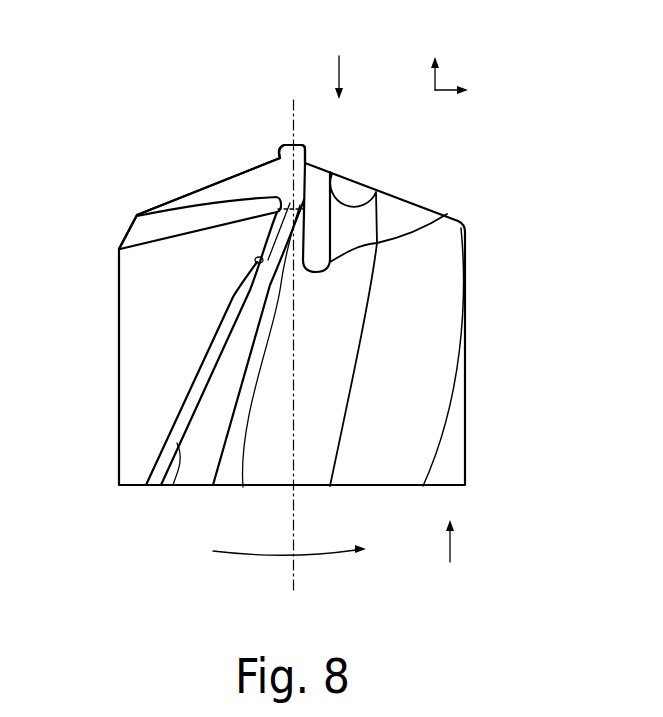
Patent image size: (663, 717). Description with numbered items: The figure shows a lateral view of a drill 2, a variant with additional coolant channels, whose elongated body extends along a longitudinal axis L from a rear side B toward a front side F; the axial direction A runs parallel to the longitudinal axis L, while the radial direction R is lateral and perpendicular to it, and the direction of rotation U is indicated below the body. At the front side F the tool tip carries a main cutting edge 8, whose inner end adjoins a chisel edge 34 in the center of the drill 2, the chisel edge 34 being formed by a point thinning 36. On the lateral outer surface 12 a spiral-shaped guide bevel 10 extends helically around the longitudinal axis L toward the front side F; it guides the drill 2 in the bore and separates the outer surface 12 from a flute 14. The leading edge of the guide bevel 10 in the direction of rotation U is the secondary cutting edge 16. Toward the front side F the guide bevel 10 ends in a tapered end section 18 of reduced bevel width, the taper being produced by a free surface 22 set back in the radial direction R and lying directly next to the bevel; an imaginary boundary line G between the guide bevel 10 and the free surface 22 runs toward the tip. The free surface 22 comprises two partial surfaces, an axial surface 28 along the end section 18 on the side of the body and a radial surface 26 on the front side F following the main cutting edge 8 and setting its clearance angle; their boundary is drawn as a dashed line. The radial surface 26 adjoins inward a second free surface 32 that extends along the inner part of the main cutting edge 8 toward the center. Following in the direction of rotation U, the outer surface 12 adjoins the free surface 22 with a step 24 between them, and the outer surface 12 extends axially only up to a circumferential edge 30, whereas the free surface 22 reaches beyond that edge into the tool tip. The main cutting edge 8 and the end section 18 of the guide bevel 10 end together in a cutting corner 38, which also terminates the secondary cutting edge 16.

The drill 2 is at (139, 164).
The main cutting edge 8 is at (306, 165).
The guide bevel 10 is at (154, 480).
The lateral outer surface 12 is at (256, 258).
The flute 14 is at (397, 462).
The secondary cutting edge 16 is at (173, 485).
The end section 18 is at (243, 487).
The free surface 22 is at (148, 312).
The step 24 is at (178, 384).
The radial surface 26 is at (220, 184).
The axial surface 28 is at (272, 228).
The circumferential edge 30 is at (120, 251).
The second free surface 32 is at (270, 192).
The chisel edge 34 is at (283, 144).
The point thinning 36 is at (400, 218).
The cutting corner 38 is at (306, 176).
The longitudinal axis L is at (292, 108).
The front side F is at (342, 64).
The axial direction A is at (433, 80).
The radial direction R is at (450, 90).
The rear side B is at (451, 556).
The direction of rotation U is at (248, 556).
The boundary line G is at (157, 334).